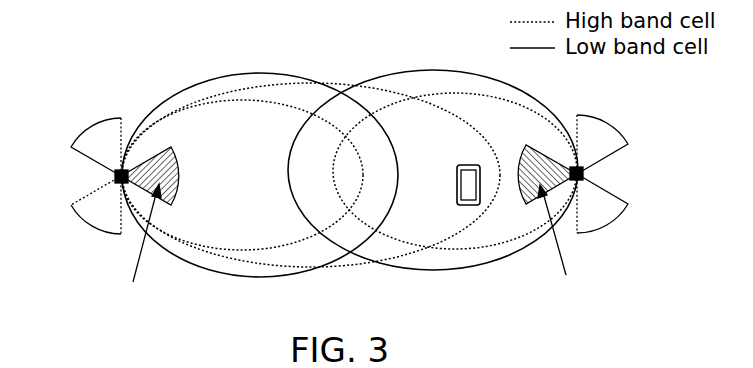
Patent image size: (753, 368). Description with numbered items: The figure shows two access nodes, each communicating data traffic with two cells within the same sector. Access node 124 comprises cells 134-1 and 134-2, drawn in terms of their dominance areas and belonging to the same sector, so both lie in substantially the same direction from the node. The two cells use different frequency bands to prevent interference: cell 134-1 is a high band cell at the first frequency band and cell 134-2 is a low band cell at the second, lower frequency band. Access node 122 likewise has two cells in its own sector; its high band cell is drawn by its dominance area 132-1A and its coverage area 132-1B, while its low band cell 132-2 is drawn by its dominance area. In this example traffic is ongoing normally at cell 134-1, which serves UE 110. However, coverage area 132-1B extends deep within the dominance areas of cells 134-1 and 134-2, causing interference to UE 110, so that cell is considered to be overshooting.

The UE 110 is at (464, 166).
The access node 122 is at (115, 174).
The access node 124 is at (585, 173).
The dominance area 132-1A is at (274, 251).
The coverage area 132-1B is at (350, 267).
The cell 132-2 is at (215, 80).
The cell 134-1 is at (493, 248).
The cell 134-2 is at (427, 70).